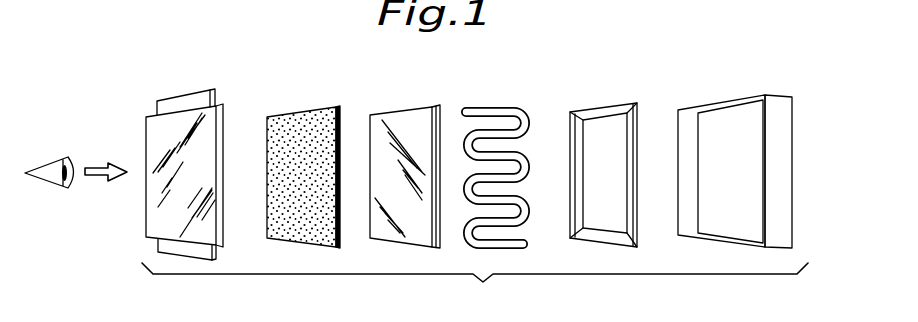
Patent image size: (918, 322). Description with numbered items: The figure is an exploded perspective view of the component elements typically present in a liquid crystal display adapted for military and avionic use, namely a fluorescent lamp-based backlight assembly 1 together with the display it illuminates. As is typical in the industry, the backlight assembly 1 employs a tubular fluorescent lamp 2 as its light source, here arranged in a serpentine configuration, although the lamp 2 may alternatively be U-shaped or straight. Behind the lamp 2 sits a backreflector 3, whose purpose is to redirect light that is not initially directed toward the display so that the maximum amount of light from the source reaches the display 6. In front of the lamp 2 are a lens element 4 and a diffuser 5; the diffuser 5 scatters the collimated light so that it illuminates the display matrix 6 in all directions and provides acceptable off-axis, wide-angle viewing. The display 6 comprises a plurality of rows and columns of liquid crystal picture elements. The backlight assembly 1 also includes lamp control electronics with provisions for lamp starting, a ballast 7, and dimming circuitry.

The backlight assembly 1 is at (485, 291).
The tubular fluorescent lamp 2 is at (498, 105).
The backreflector 3 is at (597, 106).
The lens element 4 is at (398, 120).
The diffuser 5 is at (295, 120).
The display 6 is at (177, 100).
The ballast 7 is at (782, 118).